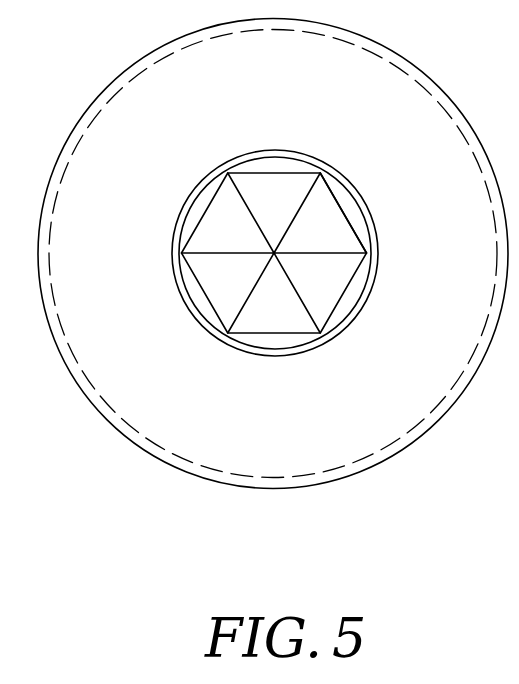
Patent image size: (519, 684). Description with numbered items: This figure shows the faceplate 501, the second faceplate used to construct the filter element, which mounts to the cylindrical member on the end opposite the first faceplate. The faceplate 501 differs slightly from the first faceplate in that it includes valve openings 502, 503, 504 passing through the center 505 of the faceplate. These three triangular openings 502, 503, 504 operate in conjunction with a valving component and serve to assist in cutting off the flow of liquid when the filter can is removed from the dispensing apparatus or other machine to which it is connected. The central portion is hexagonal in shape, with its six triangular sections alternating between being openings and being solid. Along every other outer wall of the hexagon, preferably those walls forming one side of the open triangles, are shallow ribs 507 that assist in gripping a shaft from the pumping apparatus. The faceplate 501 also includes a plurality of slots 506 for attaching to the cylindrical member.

The faceplate 501 is at (423, 68).
The valve opening 502 is at (197, 308).
The valve opening 503 is at (323, 287).
The valve opening 504 is at (275, 171).
The center 505 is at (348, 224).
The slots 506 is at (247, 353).
The shallow ribs 507 is at (143, 137).